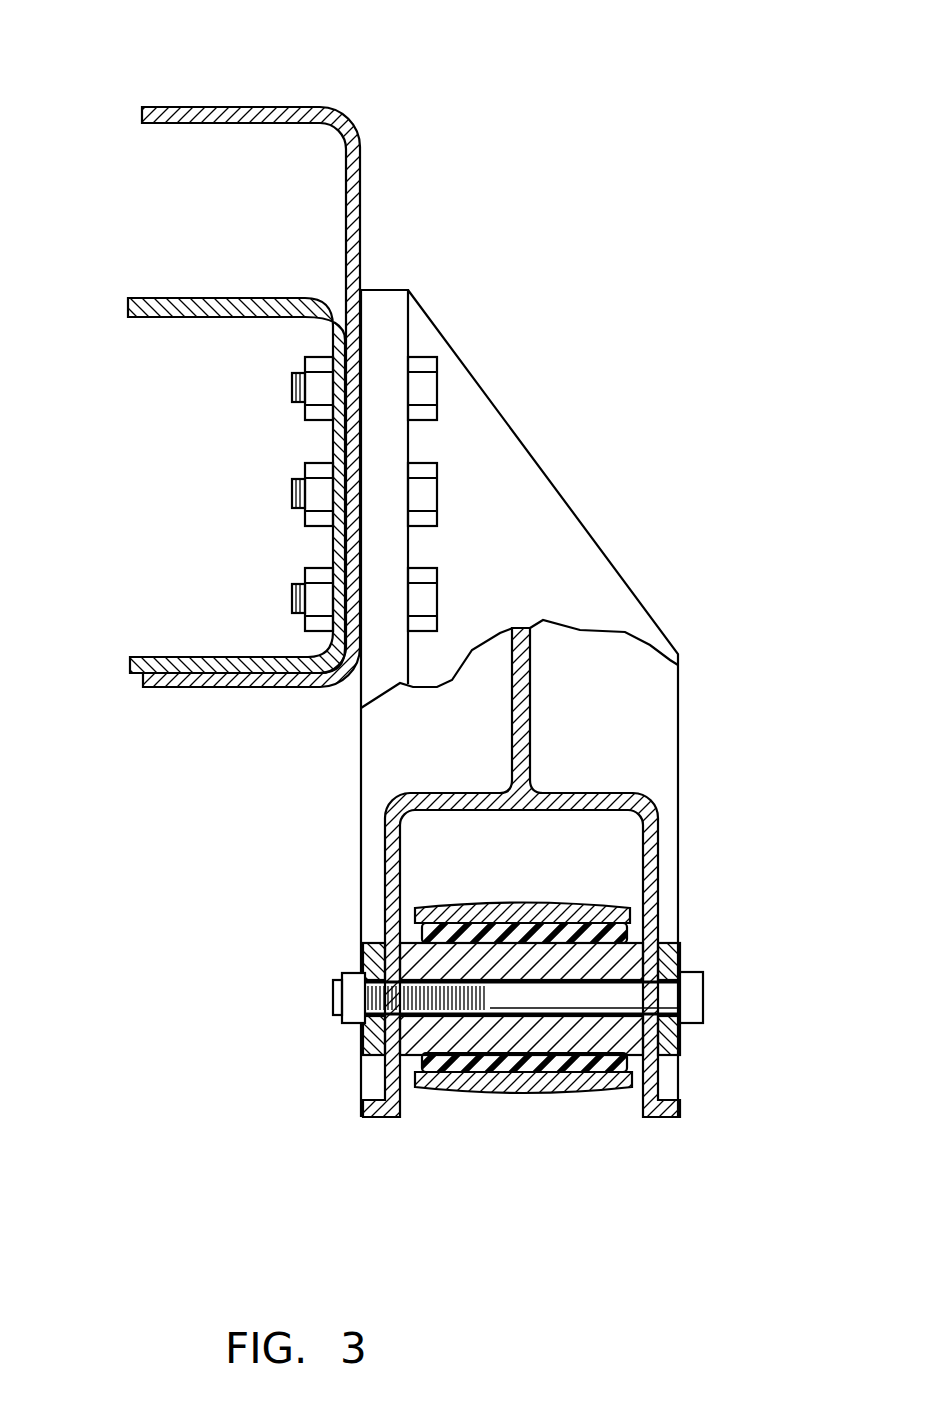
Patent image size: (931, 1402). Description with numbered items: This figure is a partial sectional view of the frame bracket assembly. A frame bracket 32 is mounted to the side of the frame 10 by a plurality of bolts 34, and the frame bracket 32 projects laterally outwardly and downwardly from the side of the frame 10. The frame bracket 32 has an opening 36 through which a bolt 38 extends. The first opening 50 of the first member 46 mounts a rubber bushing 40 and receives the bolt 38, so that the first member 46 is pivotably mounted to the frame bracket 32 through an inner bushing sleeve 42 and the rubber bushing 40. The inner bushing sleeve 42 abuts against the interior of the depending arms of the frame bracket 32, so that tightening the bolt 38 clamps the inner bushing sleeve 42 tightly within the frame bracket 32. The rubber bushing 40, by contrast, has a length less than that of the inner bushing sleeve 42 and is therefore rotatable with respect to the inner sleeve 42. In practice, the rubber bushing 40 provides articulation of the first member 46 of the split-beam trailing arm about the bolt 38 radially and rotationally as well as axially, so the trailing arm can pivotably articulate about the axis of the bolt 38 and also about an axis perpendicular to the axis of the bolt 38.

The frame 10 is at (278, 107).
The frame bracket 32 is at (600, 550).
The bolts 34 is at (438, 473).
The opening 36 is at (681, 937).
The bolt 38 is at (705, 1001).
The rubber bushing 40 is at (593, 1055).
The inner bushing sleeve 42 is at (428, 1040).
The first member 46 is at (527, 1097).
The first opening 50 is at (482, 1072).